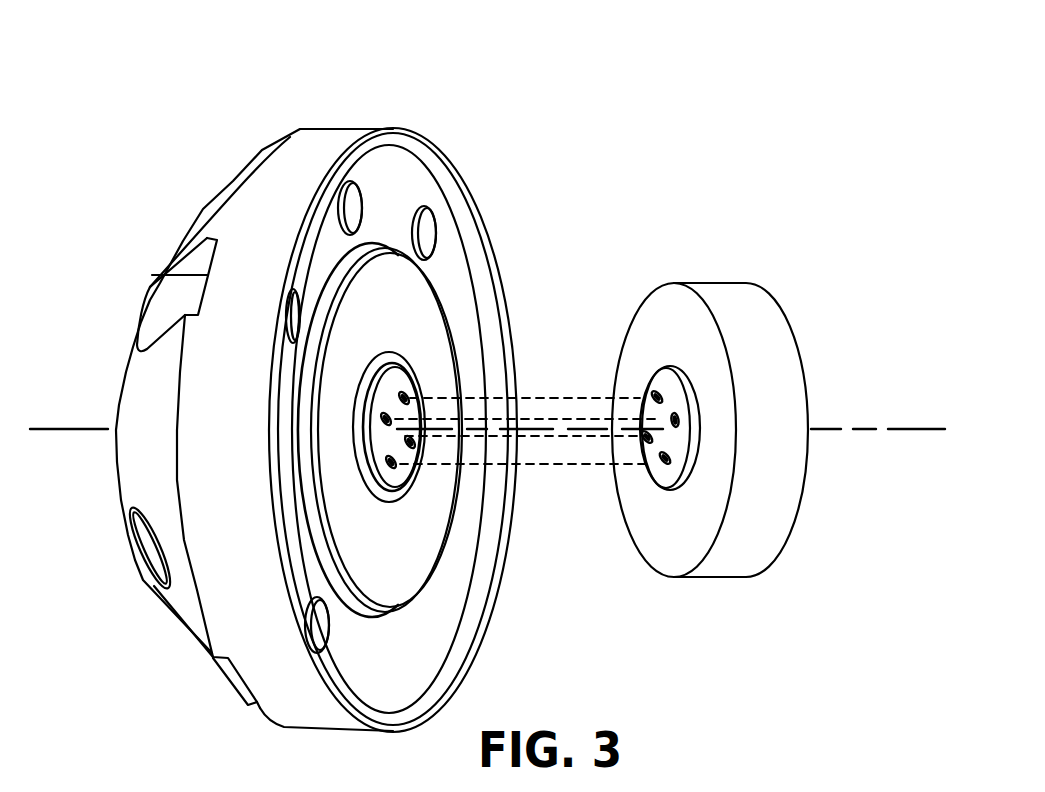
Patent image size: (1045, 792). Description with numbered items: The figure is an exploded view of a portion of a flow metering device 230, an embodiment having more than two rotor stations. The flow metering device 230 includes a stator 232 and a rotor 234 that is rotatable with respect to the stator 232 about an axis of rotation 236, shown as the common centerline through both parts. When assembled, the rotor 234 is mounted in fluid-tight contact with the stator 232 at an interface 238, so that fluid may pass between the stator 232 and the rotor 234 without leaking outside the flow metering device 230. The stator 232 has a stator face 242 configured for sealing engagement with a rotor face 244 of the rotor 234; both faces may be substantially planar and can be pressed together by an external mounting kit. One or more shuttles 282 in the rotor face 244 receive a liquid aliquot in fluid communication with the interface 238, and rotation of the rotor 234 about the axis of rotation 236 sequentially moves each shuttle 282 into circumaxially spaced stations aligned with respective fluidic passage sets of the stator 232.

The flow metering device 230 is at (490, 376).
The stator 232 is at (200, 208).
The rotor 234 is at (729, 276).
The axis of rotation 236 is at (917, 428).
The interface 238 is at (667, 385).
The stator face 242 is at (400, 478).
The rotor face 244 is at (668, 385).
The shuttle 282 is at (682, 414).